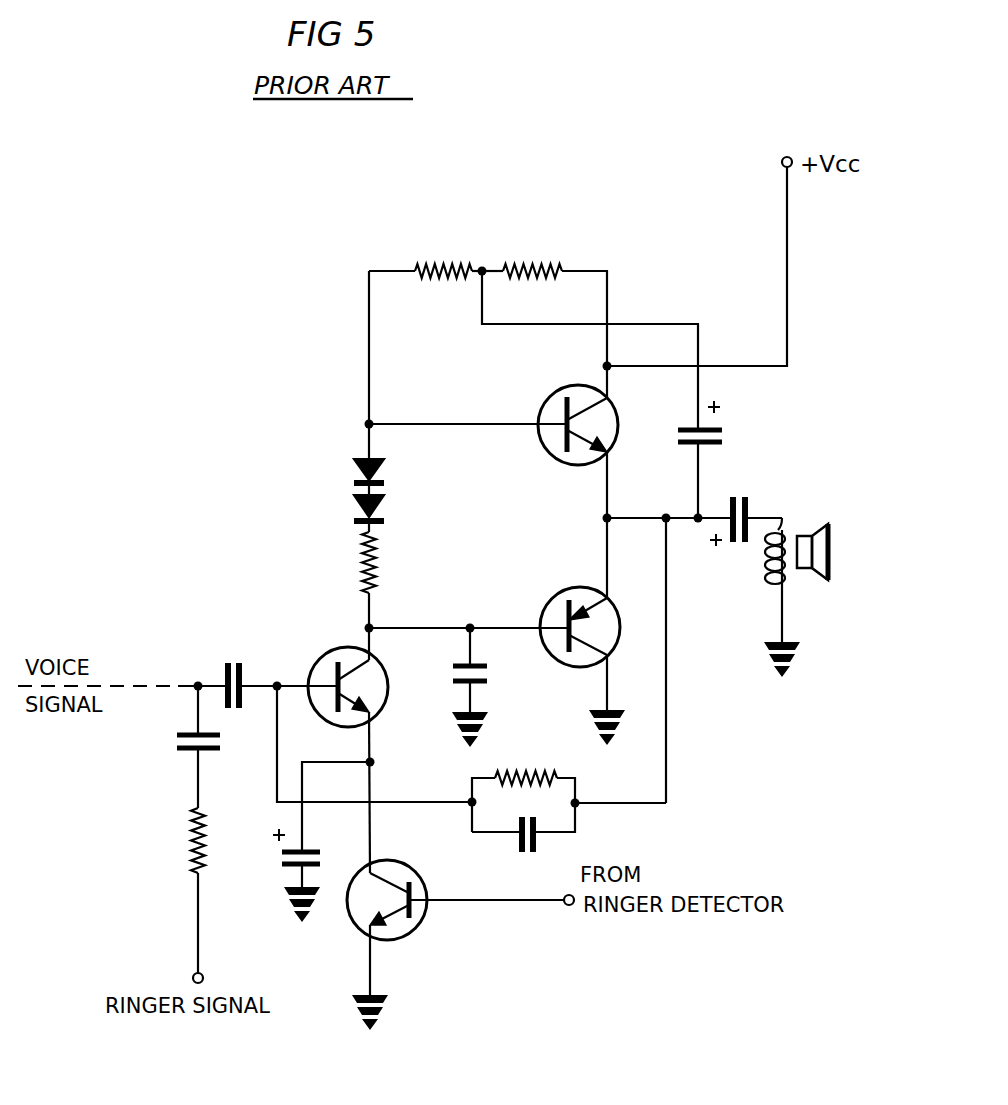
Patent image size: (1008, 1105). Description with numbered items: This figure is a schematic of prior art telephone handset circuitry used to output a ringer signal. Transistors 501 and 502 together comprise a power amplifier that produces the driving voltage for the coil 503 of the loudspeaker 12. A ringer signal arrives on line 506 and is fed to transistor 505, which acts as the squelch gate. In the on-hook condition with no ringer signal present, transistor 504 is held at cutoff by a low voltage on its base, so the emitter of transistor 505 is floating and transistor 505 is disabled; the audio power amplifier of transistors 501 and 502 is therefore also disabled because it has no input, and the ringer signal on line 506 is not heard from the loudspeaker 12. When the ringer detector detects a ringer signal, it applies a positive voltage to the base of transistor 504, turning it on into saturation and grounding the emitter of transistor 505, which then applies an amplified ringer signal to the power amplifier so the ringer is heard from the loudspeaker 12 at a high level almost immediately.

The transistor 501 is at (553, 396).
The transistor 502 is at (560, 593).
The coil 503 is at (783, 518).
The transistor 504 is at (412, 932).
The transistor 505 is at (335, 651).
The line 506 is at (197, 915).
The loudspeaker 12 is at (831, 556).